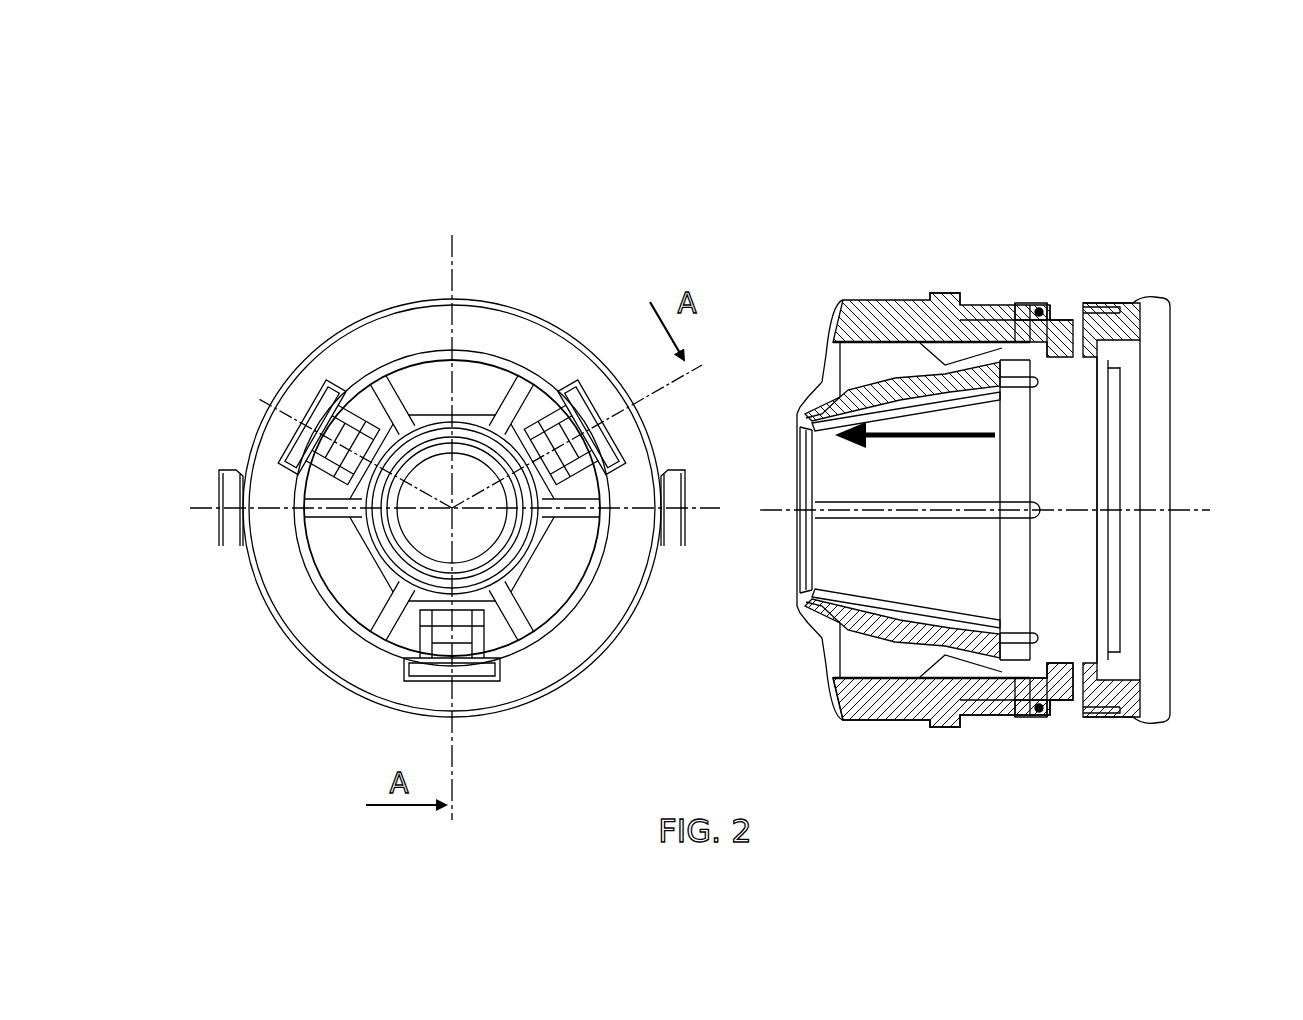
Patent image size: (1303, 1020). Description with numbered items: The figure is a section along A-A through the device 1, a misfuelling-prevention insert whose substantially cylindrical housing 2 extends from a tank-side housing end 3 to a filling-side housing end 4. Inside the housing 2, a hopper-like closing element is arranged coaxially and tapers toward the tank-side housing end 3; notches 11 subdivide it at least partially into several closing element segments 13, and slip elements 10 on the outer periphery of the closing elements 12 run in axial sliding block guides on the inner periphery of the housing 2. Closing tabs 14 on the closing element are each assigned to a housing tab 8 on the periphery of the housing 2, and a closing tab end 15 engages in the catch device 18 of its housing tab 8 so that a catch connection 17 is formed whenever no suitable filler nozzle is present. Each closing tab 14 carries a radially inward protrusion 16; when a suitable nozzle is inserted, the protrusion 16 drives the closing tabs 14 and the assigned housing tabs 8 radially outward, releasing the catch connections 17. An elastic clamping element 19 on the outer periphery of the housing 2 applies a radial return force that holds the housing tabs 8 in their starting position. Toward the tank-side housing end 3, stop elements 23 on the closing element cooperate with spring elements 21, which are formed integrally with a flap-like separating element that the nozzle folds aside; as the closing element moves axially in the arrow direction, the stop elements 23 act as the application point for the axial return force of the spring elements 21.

The device 1 is at (705, 172).
The housing 2 is at (1161, 346).
The tank-side housing end 3 is at (870, 736).
The filling-side housing end 4 is at (1167, 743).
The housing tab 8 is at (1032, 312).
The slip element 10 is at (864, 358).
The notch 11 is at (873, 507).
The closing elements 12 is at (1097, 650).
The closing element segment 13 is at (910, 553).
The closing tab 14 is at (945, 365).
The closing tab end 15 is at (957, 447).
The protrusion 16 is at (970, 388).
The catch connection 17 is at (1018, 305).
The catch device 18 is at (1034, 690).
The clamping element 19 is at (1040, 310).
The spring element 21 is at (835, 665).
The stop element 23 is at (826, 330).